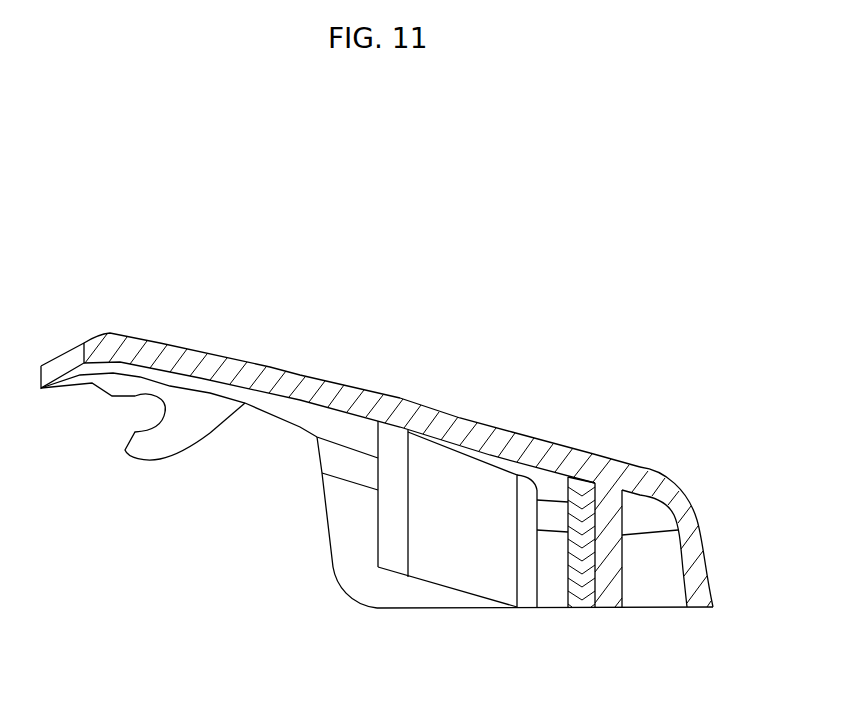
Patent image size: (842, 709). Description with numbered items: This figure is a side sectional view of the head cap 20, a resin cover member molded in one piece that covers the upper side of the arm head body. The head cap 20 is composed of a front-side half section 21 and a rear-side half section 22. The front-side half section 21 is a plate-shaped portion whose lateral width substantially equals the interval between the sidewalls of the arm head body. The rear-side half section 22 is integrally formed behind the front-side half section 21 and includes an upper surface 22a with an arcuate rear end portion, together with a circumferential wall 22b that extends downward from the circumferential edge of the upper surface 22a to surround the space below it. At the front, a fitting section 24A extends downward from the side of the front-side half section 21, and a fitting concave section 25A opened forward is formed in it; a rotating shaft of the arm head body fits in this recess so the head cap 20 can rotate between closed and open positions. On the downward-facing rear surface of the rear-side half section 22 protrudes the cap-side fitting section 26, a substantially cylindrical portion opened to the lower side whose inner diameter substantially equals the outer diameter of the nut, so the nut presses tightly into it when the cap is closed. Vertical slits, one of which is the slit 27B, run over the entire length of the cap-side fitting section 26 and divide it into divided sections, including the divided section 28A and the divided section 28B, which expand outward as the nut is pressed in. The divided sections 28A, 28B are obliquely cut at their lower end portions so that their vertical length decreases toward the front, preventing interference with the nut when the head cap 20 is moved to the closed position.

The head cap 20 is at (364, 303).
The front-side half section 21 is at (270, 367).
The rear-side half section 22 is at (657, 472).
The upper surface 22a is at (512, 432).
The circumferential wall 22b is at (705, 537).
The fitting section 24A is at (200, 437).
The fitting concave section 25A is at (162, 411).
The cap-side fitting section 26 is at (447, 490).
The slit 27B is at (552, 550).
The divided section 28A is at (393, 478).
The divided section 28B is at (582, 527).